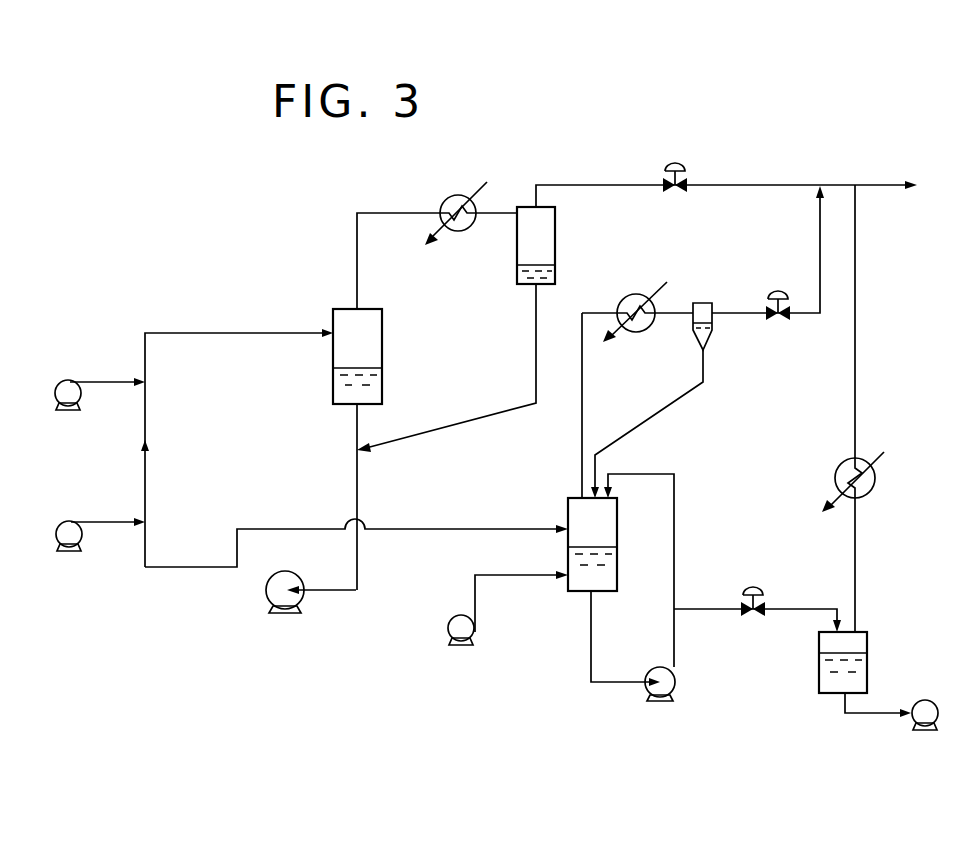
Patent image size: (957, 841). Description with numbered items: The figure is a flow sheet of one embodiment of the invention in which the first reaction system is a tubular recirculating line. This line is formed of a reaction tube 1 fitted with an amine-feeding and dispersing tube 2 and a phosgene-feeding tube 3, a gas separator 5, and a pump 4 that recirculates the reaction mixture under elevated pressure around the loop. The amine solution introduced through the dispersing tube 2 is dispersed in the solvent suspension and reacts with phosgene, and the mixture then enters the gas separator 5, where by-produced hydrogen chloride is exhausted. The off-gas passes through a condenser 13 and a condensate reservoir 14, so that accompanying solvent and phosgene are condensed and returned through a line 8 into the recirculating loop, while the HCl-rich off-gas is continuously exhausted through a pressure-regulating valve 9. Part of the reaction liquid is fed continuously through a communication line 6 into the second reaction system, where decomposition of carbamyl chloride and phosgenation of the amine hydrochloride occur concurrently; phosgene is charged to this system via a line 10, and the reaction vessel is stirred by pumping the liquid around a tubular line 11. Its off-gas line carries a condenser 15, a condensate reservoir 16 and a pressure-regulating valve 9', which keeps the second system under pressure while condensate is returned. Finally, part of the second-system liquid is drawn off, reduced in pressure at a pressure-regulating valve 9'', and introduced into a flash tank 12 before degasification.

The reaction tube 1 is at (219, 333).
The amine-feeding and dispersing tube 2 is at (110, 382).
The phosgene-feeding tube 3 is at (113, 522).
The pump 4 is at (270, 600).
The gas separator 5 is at (333, 358).
The communication line 6 is at (447, 529).
The line 8 is at (484, 420).
The pressure-regulating valve 9 is at (726, 171).
The pressure-regulating valve 9' is at (770, 284).
The pressure-regulating valve 9'' is at (757, 630).
The line 10 is at (529, 577).
The tubular line 11 is at (676, 552).
The flash tank 12 is at (868, 642).
The condenser 13 is at (468, 232).
The condensate reservoir 14 is at (557, 257).
The condenser 15 is at (637, 332).
The condensate reservoir 16 is at (712, 322).